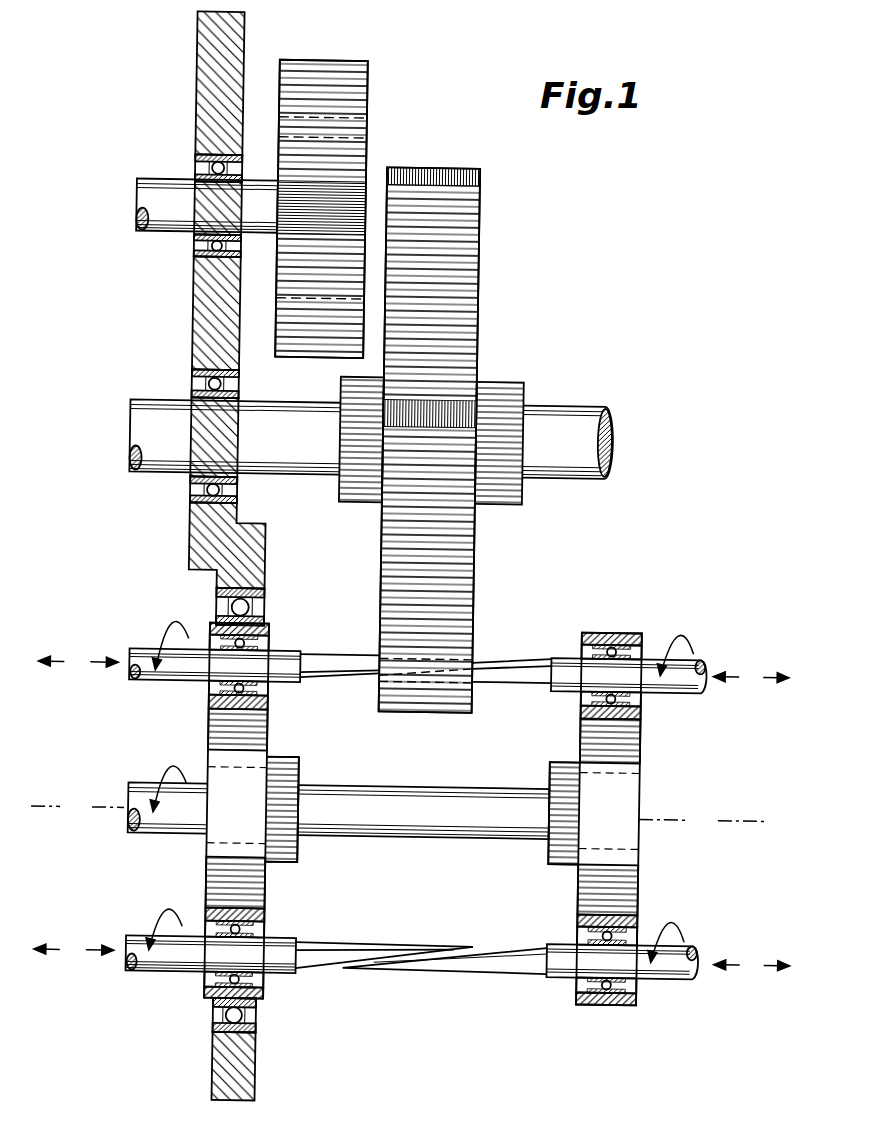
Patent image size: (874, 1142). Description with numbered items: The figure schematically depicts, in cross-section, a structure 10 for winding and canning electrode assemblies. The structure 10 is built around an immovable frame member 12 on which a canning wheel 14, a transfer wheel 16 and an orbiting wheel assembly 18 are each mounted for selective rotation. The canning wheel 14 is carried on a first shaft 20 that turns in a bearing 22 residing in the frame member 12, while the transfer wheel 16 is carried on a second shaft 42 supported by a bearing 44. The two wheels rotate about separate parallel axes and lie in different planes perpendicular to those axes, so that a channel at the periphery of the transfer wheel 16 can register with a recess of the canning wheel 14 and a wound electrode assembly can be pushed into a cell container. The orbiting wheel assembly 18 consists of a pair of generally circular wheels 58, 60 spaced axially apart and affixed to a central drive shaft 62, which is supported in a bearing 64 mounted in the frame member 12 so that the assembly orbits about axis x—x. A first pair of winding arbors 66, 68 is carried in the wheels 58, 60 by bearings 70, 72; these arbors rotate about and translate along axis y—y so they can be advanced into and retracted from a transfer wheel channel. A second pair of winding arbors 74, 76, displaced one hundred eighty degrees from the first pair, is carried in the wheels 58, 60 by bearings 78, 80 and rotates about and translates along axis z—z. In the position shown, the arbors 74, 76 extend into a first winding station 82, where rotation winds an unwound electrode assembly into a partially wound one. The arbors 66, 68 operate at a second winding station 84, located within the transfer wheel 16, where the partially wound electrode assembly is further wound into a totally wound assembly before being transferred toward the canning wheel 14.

The structure 10 is at (606, 288).
The frame member 12 is at (189, 316).
The canning wheel 14 is at (362, 86).
The transfer wheel 16 is at (474, 273).
The orbiting wheel assembly 18 is at (185, 886).
The first shaft 20 is at (137, 237).
The bearing 22 is at (189, 172).
The second shaft 42 is at (140, 482).
The bearing 44 is at (199, 391).
The circular wheel 58 is at (211, 734).
The circular wheel 60 is at (644, 746).
The central drive shaft 62 is at (155, 841).
The bearing 64 is at (226, 612).
The winding arbor 66 is at (334, 657).
The winding arbor 68 is at (530, 661).
The bearing 70 is at (221, 697).
The bearing 72 is at (613, 633).
The winding arbor 74 is at (327, 975).
The winding arbor 76 is at (530, 977).
The bearing 78 is at (236, 987).
The bearing 80 is at (607, 1004).
The first winding station 82 is at (442, 1004).
The second winding station 84 is at (434, 736).